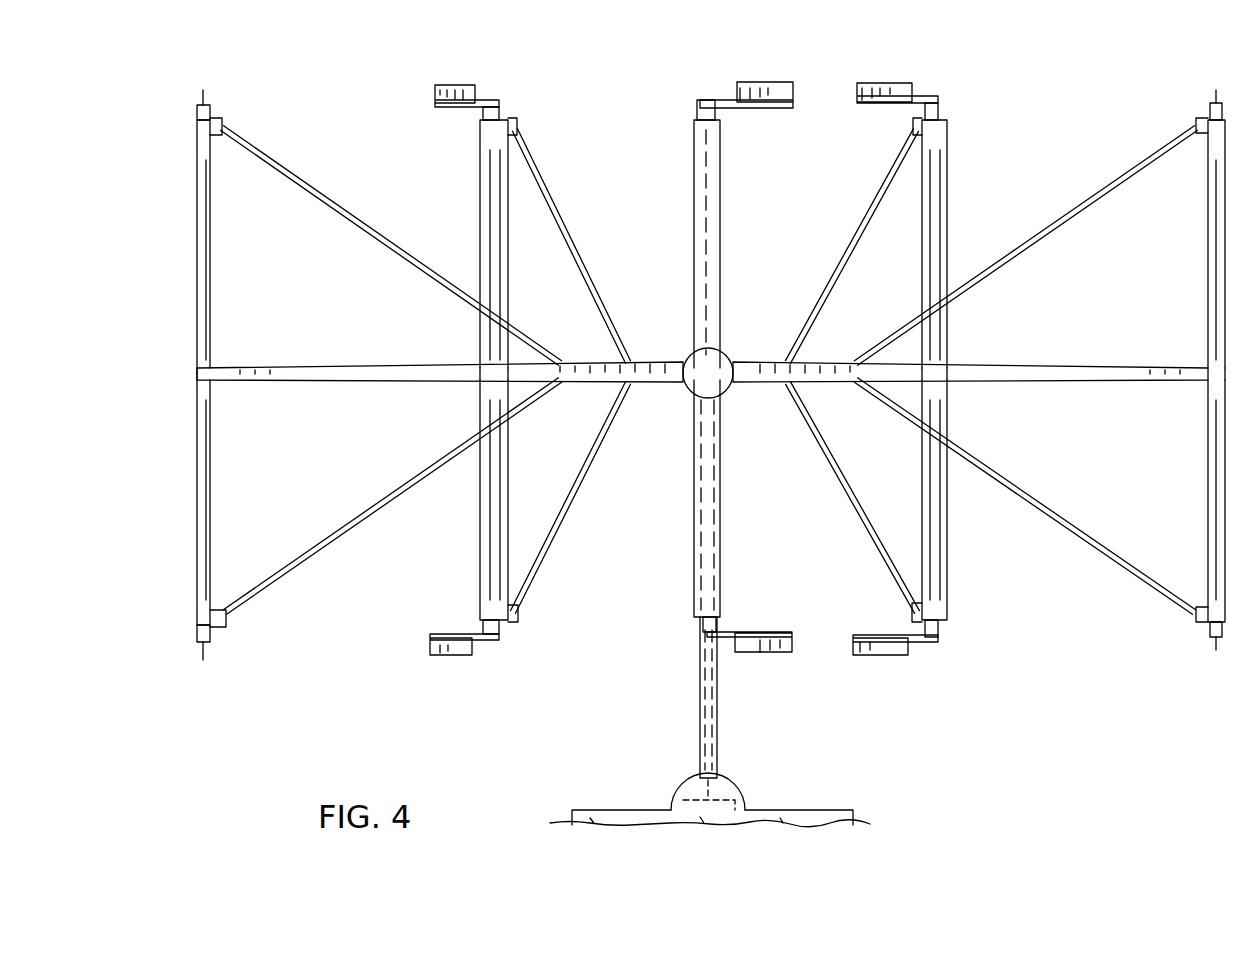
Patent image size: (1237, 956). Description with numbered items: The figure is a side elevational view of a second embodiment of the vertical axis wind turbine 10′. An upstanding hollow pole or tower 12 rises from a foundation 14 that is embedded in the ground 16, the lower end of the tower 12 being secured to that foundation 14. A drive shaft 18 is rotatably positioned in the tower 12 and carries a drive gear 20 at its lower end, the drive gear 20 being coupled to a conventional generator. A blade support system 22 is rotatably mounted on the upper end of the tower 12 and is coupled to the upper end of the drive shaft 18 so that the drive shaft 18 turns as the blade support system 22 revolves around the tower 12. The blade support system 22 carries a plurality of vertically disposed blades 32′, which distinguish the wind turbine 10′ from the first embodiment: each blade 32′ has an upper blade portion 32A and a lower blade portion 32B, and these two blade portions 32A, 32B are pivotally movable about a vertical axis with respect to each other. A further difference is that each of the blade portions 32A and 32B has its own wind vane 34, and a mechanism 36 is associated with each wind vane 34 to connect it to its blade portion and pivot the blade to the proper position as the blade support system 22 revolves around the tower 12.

The wind turbine 10′ is at (625, 142).
The tower 12 is at (680, 668).
The foundation 14 is at (840, 806).
The ground 16 is at (870, 823).
The drive shaft 18 is at (710, 737).
The drive gear 20 is at (752, 800).
The blade support system 22 is at (655, 340).
The blade 32′ is at (215, 253).
The upper blade portion 32A is at (493, 181).
The lower blade portion 32B is at (212, 492).
The wind vane 34 is at (455, 88).
The mechanism 36 is at (506, 116).